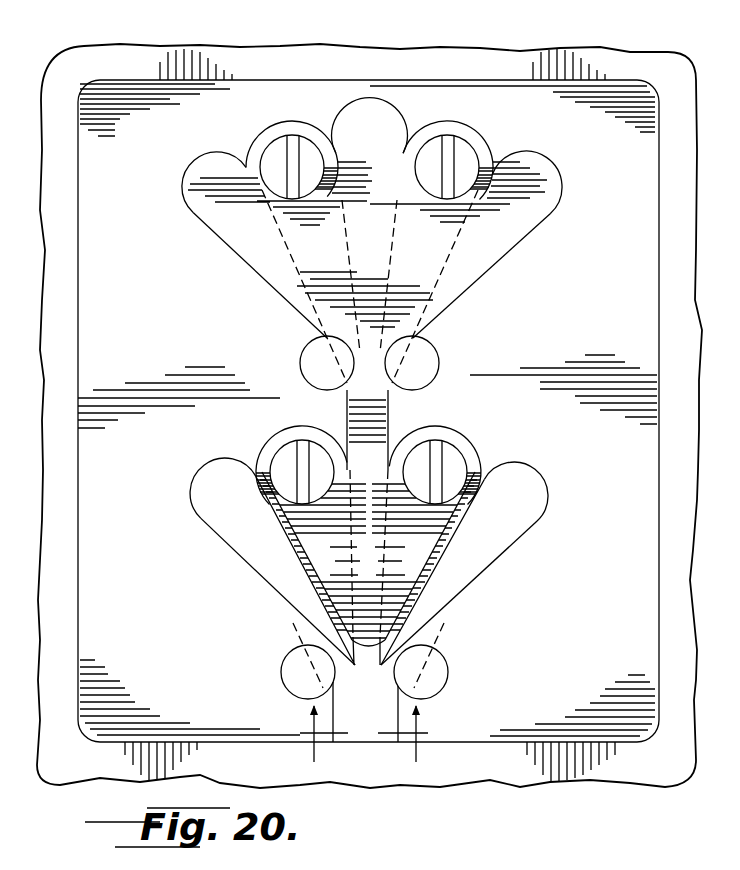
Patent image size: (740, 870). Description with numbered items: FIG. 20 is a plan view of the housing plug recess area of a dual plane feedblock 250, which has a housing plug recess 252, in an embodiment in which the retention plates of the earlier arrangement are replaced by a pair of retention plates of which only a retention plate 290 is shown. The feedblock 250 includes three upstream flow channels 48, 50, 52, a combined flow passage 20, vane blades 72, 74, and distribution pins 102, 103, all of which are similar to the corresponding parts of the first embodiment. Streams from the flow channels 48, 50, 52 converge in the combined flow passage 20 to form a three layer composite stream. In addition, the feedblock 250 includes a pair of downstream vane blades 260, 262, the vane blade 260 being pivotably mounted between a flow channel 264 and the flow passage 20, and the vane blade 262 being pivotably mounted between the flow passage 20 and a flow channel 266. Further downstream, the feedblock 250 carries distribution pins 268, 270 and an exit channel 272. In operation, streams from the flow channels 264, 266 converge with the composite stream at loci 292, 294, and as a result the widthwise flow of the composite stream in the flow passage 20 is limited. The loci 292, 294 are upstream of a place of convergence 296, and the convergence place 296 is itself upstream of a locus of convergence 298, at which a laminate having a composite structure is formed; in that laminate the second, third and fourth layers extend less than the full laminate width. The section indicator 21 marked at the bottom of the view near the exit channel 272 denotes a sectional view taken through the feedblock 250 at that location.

The dual plane feedblock 250 is at (146, 106).
The housing plug recess 252 is at (250, 87).
The flow channel 50 is at (359, 148).
The retention plate 290 is at (441, 126).
The flow channel 48 is at (251, 237).
The flow channel 52 is at (492, 247).
The vane blade 72 is at (304, 266).
The vane blade 74 is at (444, 261).
The distribution pin 102 is at (302, 357).
The distribution pin 103 is at (438, 350).
The combined flow passage 20 is at (367, 392).
The flow channel 264 is at (228, 537).
The flow channel 266 is at (493, 537).
The downstream vane blade 260 is at (307, 583).
The downstream vane blade 262 is at (418, 605).
The locus 292 is at (347, 642).
The locus 294 is at (381, 640).
The distribution pin 268 is at (286, 660).
The distribution pin 270 is at (453, 663).
The place of convergence 296 is at (367, 648).
The locus of convergence 298 is at (365, 677).
The exit channel 272 is at (380, 723).
The section line 21 is at (359, 744).